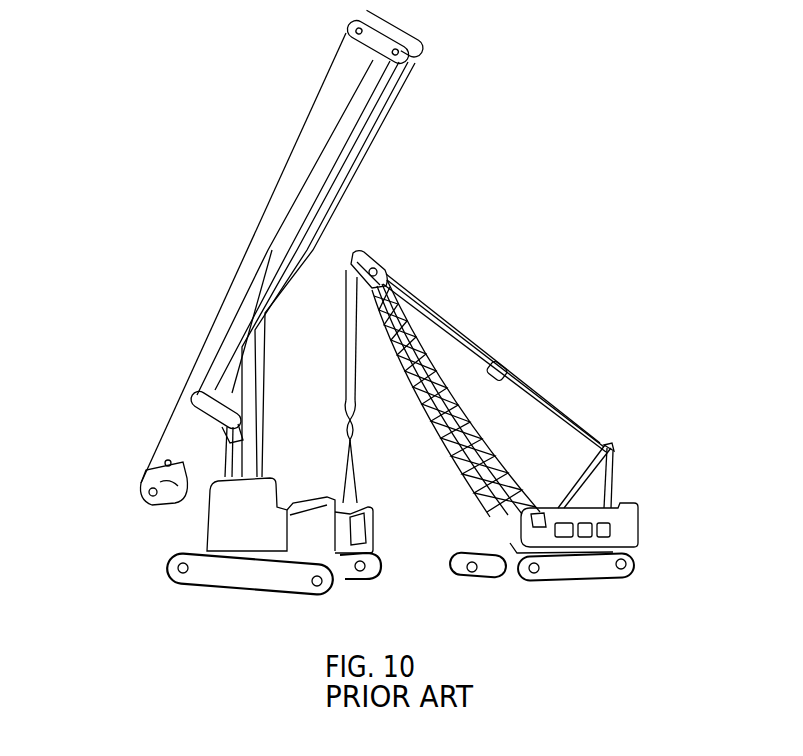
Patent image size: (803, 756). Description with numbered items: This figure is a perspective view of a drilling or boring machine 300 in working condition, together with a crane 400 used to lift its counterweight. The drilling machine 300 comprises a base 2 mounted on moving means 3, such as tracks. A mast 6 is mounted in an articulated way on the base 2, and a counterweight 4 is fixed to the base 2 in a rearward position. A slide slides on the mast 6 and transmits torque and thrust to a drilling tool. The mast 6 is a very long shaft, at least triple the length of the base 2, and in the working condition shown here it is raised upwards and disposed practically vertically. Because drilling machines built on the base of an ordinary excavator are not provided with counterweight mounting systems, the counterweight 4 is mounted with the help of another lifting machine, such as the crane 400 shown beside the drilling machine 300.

The base 2 is at (317, 540).
The moving means 3 is at (218, 570).
The counterweight 4 is at (370, 543).
The mast 6 is at (318, 133).
The drilling or boring machine 300 is at (150, 446).
The crane 400 is at (590, 405).